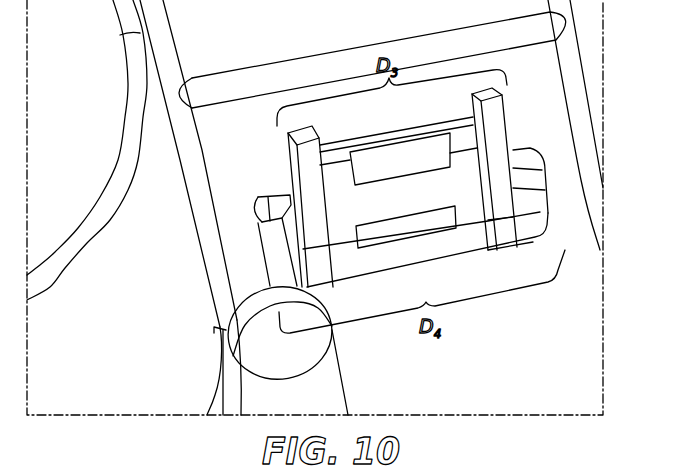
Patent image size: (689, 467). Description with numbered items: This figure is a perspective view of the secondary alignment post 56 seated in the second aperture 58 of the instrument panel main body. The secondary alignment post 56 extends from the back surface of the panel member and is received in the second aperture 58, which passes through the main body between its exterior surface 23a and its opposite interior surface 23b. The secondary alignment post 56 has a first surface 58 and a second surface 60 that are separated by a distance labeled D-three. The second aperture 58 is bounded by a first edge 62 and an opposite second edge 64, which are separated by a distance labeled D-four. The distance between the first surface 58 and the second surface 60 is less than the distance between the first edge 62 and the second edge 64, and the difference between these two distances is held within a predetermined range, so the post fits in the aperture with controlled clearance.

The exterior surface 23a is at (268, 203).
The interior surface 23b is at (537, 375).
The secondary alignment post 56 is at (457, 192).
The second aperture 58 is at (502, 114).
The second surface 60 is at (298, 204).
The first edge 62 is at (542, 190).
The second edge 64 is at (257, 250).